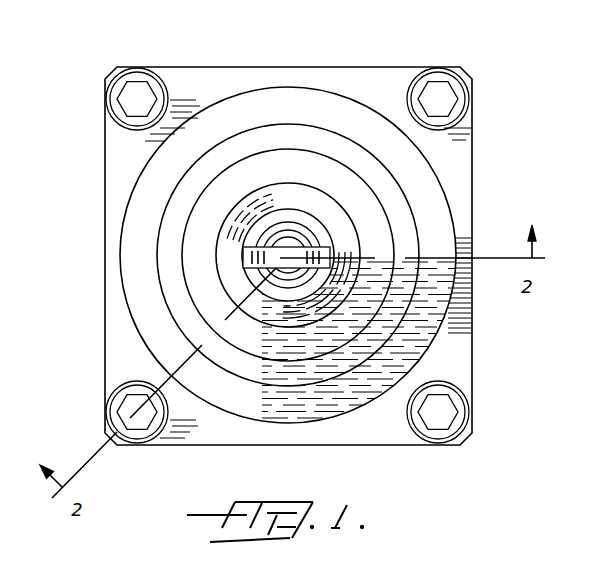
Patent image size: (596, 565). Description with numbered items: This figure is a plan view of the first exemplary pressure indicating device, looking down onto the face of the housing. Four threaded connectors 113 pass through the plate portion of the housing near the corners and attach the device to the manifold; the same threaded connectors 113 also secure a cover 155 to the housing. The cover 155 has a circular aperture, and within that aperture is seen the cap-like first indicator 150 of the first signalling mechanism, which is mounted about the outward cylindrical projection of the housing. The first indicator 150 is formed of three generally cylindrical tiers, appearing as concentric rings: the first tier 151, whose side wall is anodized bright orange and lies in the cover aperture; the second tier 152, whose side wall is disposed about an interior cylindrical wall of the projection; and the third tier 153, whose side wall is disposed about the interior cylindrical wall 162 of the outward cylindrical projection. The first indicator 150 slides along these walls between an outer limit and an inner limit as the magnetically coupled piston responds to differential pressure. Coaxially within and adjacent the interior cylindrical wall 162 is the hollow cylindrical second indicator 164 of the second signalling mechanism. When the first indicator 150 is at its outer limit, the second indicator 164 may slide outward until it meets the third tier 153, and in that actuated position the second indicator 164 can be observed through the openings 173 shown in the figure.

The threaded connectors 113 is at (443, 93).
The first indicator 150 is at (345, 126).
The first tier 151 is at (193, 177).
The second tier 152 is at (195, 230).
The third tier 153 is at (245, 238).
The cover 155 is at (300, 105).
The interior cylindrical wall 162 is at (317, 237).
The second indicator 164 is at (305, 246).
The openings 173 is at (272, 217).